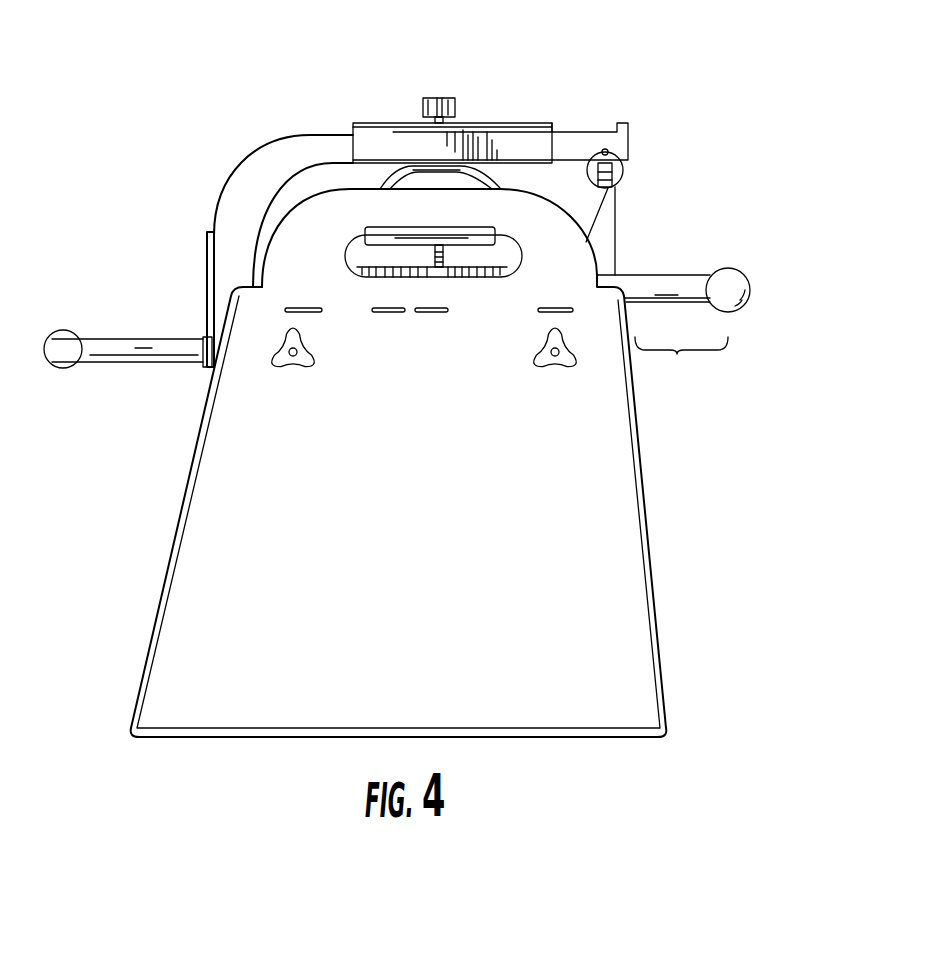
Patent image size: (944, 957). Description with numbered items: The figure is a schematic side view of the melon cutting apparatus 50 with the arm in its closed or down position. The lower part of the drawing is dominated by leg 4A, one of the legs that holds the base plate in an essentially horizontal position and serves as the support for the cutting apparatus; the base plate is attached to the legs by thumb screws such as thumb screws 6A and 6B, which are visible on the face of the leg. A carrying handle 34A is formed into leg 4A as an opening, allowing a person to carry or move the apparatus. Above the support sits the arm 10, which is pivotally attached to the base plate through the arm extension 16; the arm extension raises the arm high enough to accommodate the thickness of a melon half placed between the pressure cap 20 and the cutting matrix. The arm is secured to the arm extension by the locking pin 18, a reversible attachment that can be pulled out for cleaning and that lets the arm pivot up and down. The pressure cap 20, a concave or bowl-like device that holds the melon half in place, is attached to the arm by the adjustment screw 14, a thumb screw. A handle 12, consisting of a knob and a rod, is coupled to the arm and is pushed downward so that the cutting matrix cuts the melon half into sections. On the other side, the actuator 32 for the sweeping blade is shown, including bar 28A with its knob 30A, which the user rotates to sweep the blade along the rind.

The leg 4A is at (613, 575).
The arm 10 is at (362, 145).
The adjustment screw 14 is at (450, 98).
The pressure cap 20 is at (463, 182).
The locking pin 18 is at (607, 152).
The arm extension 16 is at (607, 240).
The bar 28A is at (665, 283).
The knob 30A is at (740, 290).
The handle 12 is at (134, 347).
The thumb screw 6A is at (293, 372).
The thumb screw 6B is at (555, 372).
The carrying handle 34A is at (465, 255).
The actuator 32 is at (677, 354).
The apparatus 50 is at (662, 787).